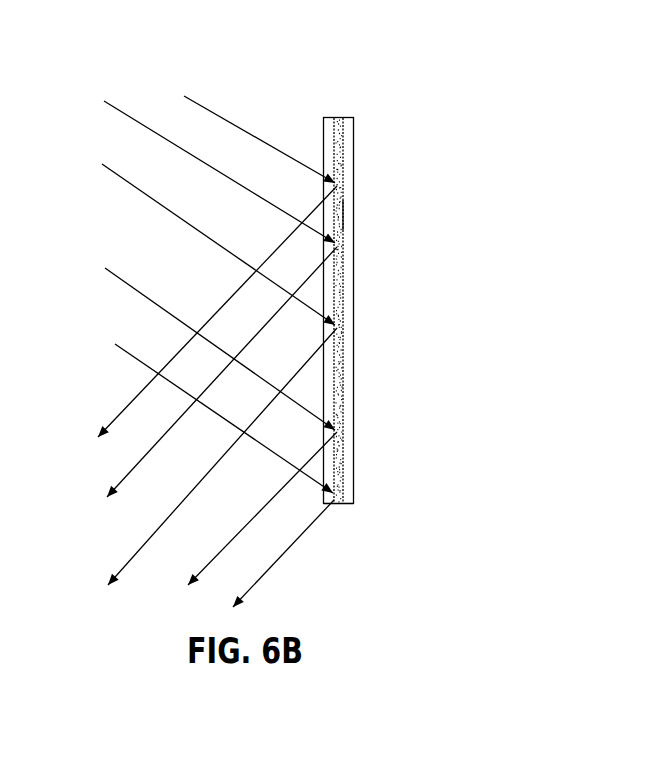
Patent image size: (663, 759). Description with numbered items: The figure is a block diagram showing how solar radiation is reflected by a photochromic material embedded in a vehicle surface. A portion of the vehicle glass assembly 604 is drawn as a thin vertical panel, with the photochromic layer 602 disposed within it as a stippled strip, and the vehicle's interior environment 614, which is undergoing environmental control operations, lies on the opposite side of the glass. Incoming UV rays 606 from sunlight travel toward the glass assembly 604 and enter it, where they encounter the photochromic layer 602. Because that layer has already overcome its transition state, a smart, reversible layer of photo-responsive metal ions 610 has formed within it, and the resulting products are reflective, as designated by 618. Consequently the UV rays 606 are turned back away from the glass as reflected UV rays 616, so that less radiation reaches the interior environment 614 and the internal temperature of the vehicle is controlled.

The photochromic material 602 is at (338, 117).
The vehicle glass assembly 604 is at (354, 132).
The UV rays 606 is at (203, 287).
The layer of photo-responsive metal ions 610 is at (344, 216).
The interior environment 614 is at (491, 400).
The reflected UV rays 616 is at (203, 396).
The reflective products 618 is at (340, 509).